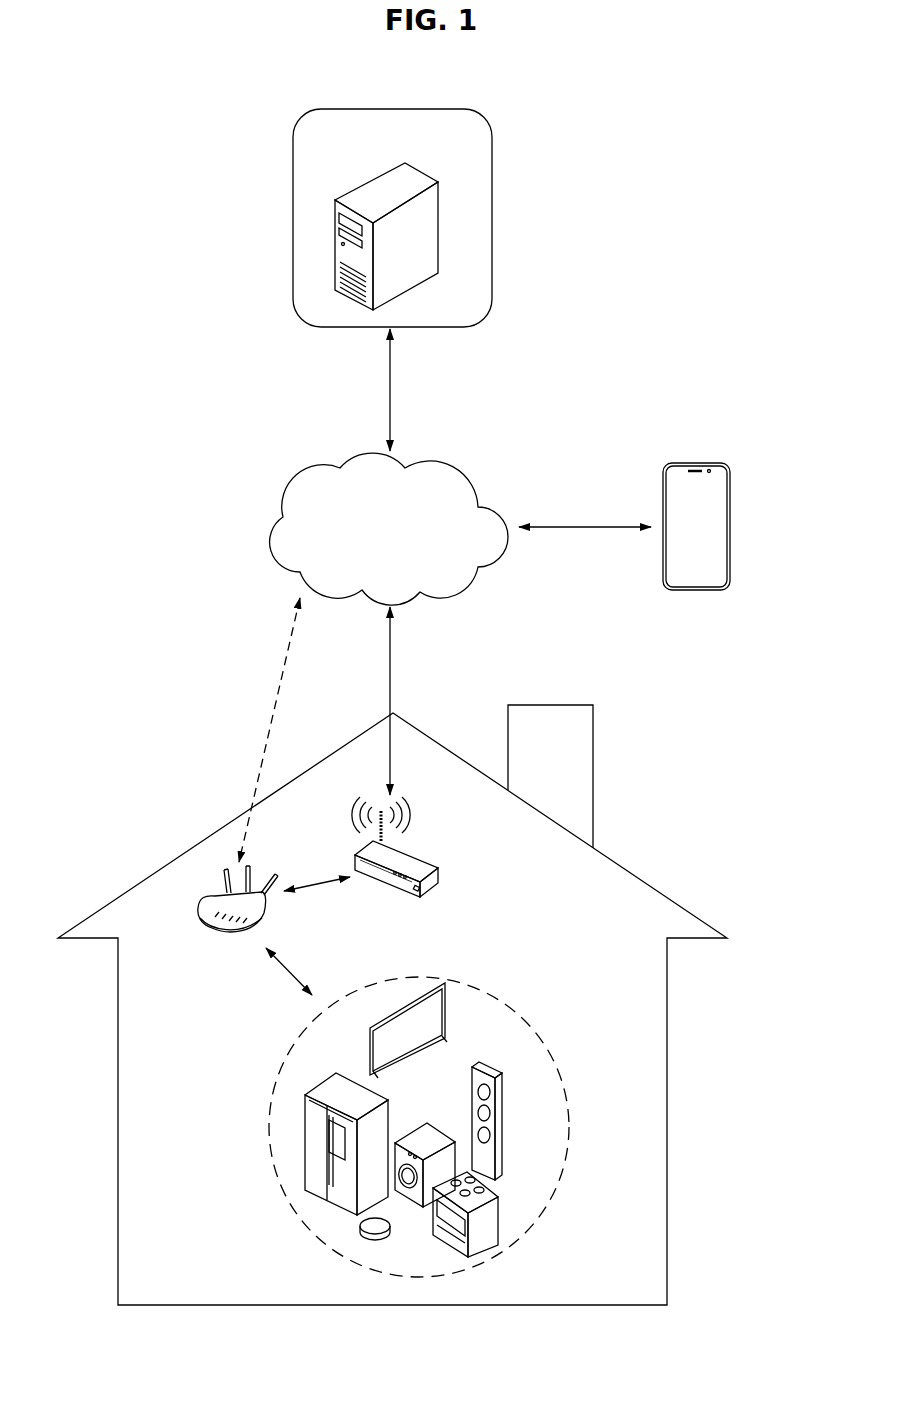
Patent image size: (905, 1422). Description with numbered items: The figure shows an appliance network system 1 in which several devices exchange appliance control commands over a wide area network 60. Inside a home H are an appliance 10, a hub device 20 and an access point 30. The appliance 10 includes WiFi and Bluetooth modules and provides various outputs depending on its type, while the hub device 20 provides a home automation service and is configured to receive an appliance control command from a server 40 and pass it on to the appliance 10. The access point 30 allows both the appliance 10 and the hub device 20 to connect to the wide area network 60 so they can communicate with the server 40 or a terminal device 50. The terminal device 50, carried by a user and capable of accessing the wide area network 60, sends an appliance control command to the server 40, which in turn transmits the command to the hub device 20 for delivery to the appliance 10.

The appliance network system 1 is at (693, 177).
The appliance 10 is at (505, 1003).
The hub device 20 is at (208, 925).
The access point 30 is at (424, 856).
The server 40 is at (393, 109).
The terminal device 50 is at (719, 463).
The wide area network 60 is at (456, 466).
The home H is at (165, 868).